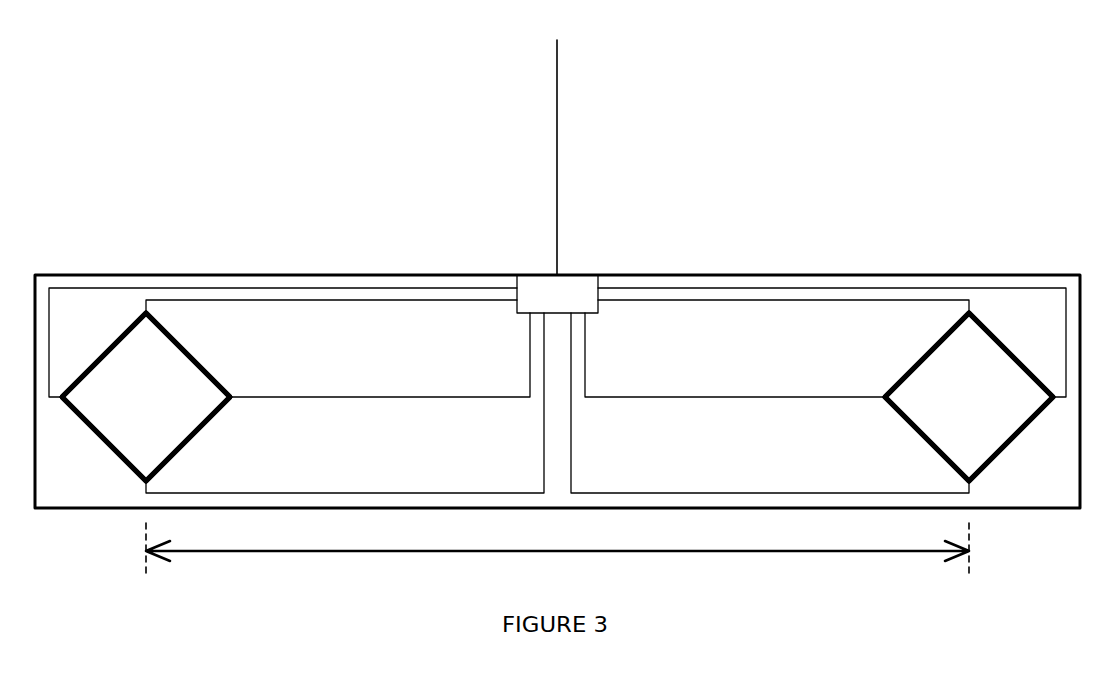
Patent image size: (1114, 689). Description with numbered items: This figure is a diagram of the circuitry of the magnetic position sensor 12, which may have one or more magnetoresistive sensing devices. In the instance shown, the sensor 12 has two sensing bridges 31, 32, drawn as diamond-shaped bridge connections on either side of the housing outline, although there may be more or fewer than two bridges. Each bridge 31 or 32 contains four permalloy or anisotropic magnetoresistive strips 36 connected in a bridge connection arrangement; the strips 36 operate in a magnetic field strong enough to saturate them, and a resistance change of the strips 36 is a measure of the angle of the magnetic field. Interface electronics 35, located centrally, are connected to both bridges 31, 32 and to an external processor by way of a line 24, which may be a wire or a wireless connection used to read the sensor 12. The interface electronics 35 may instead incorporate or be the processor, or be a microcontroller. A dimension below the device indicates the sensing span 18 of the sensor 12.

The sensor 12 is at (893, 273).
The sensing span 18 is at (723, 551).
The line 24 is at (557, 178).
The sensing bridge 31 is at (209, 465).
The sensing bridge 32 is at (906, 467).
The interface electronics 35 is at (600, 313).
The anisotropic magnetoresistive strips 36 is at (85, 367).